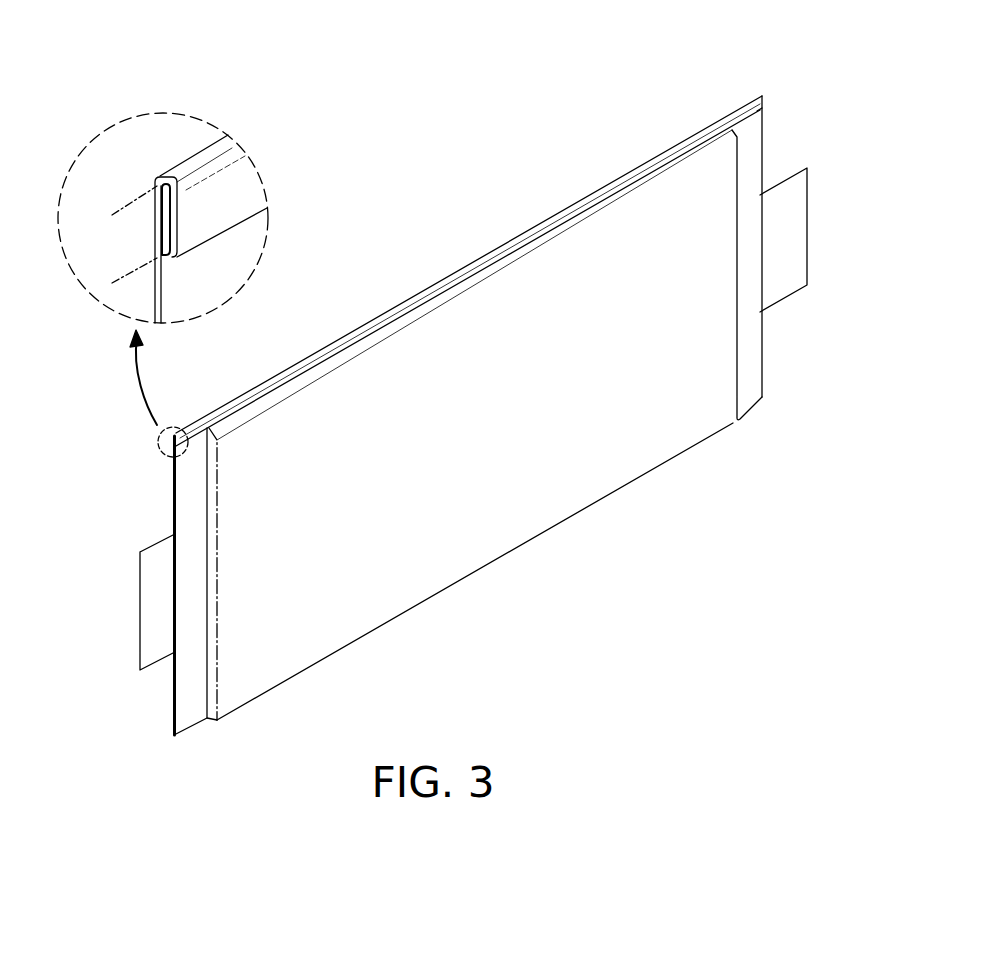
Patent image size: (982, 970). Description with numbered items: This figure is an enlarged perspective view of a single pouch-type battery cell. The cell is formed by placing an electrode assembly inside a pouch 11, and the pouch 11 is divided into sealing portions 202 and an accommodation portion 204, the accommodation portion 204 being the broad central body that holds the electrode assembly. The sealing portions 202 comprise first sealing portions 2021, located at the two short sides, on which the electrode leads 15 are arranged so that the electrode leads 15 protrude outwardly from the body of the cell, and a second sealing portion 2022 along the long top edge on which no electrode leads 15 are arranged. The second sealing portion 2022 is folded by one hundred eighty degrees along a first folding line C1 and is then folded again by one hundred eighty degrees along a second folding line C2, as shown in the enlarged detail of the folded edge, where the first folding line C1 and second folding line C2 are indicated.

The sealing portion 202 is at (751, 40).
The second sealing portion 2022 is at (652, 158).
The first sealing portion 2021 is at (187, 489).
The accommodation portion 204 is at (460, 337).
The pouch 11 is at (541, 533).
The electrode lead 15 is at (157, 640).
The first folding line C1 is at (147, 262).
The second folding line C2 is at (147, 193).